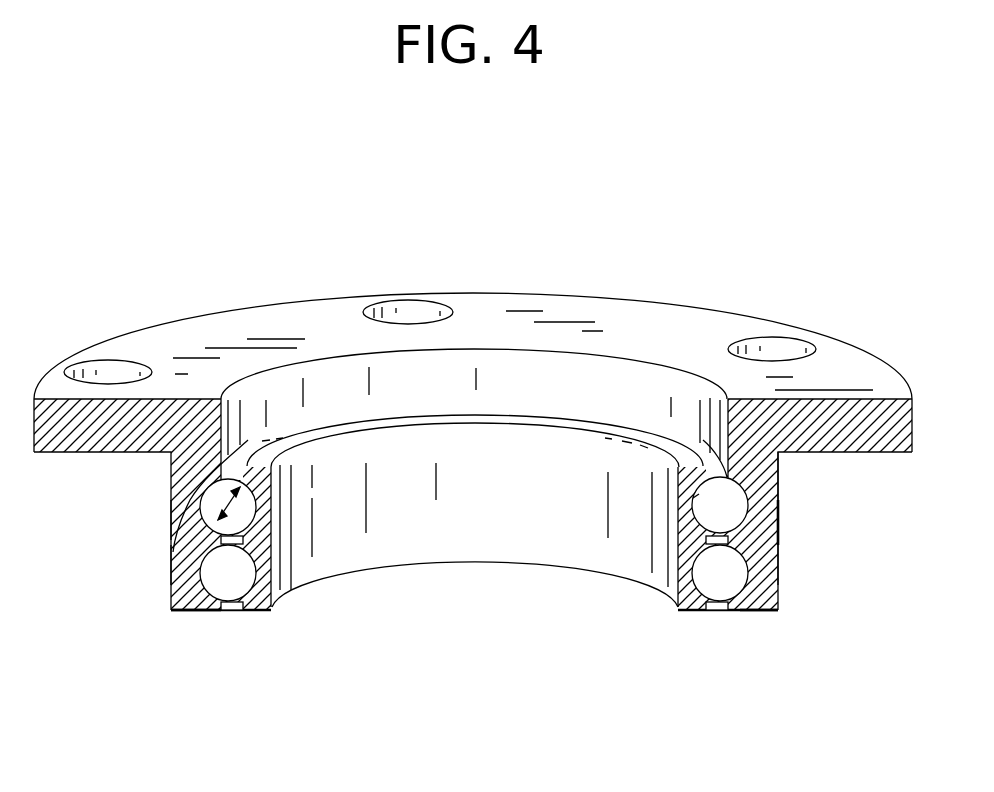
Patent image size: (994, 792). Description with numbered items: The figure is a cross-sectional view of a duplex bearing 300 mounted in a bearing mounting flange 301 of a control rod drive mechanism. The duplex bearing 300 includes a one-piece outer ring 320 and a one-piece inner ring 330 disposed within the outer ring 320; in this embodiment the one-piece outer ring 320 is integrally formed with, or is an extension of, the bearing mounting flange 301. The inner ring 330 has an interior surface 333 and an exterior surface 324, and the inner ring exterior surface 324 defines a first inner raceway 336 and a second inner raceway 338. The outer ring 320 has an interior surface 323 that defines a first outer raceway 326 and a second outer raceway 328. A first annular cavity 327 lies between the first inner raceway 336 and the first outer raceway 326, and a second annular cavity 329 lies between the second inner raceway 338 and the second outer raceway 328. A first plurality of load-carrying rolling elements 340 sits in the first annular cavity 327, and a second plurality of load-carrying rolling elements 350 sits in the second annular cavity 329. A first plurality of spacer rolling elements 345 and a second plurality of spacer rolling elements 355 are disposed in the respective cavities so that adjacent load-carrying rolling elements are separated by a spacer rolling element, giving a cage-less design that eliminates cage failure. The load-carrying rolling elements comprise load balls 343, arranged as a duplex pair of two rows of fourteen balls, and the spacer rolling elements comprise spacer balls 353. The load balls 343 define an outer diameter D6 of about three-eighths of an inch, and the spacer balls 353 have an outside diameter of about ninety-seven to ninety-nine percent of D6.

The duplex bearing 300 is at (428, 563).
The bearing mounting flange 301 is at (156, 346).
The one-piece outer ring 320 is at (186, 487).
The outer ring interior surface 323 is at (688, 390).
The inner ring exterior surface 324 is at (718, 610).
The first outer raceway 326 is at (745, 550).
The first annular cavity 327 is at (231, 583).
The second outer raceway 328 is at (740, 500).
The second annular cavity 329 is at (708, 465).
The one-piece inner ring 330 is at (262, 610).
The inner ring interior surface 333 is at (343, 558).
The first inner raceway 336 is at (677, 610).
The second inner raceway 338 is at (693, 497).
The first plurality of load-carrying rolling elements 340 is at (182, 612).
The load balls 343 is at (182, 563).
The first plurality of spacer rolling elements 345 is at (745, 563).
The second plurality of load-carrying rolling elements 350 is at (182, 523).
The spacer balls 353 is at (728, 462).
The second plurality of spacer rolling elements 355 is at (745, 483).
The outer diameter of load balls D6 is at (207, 478).